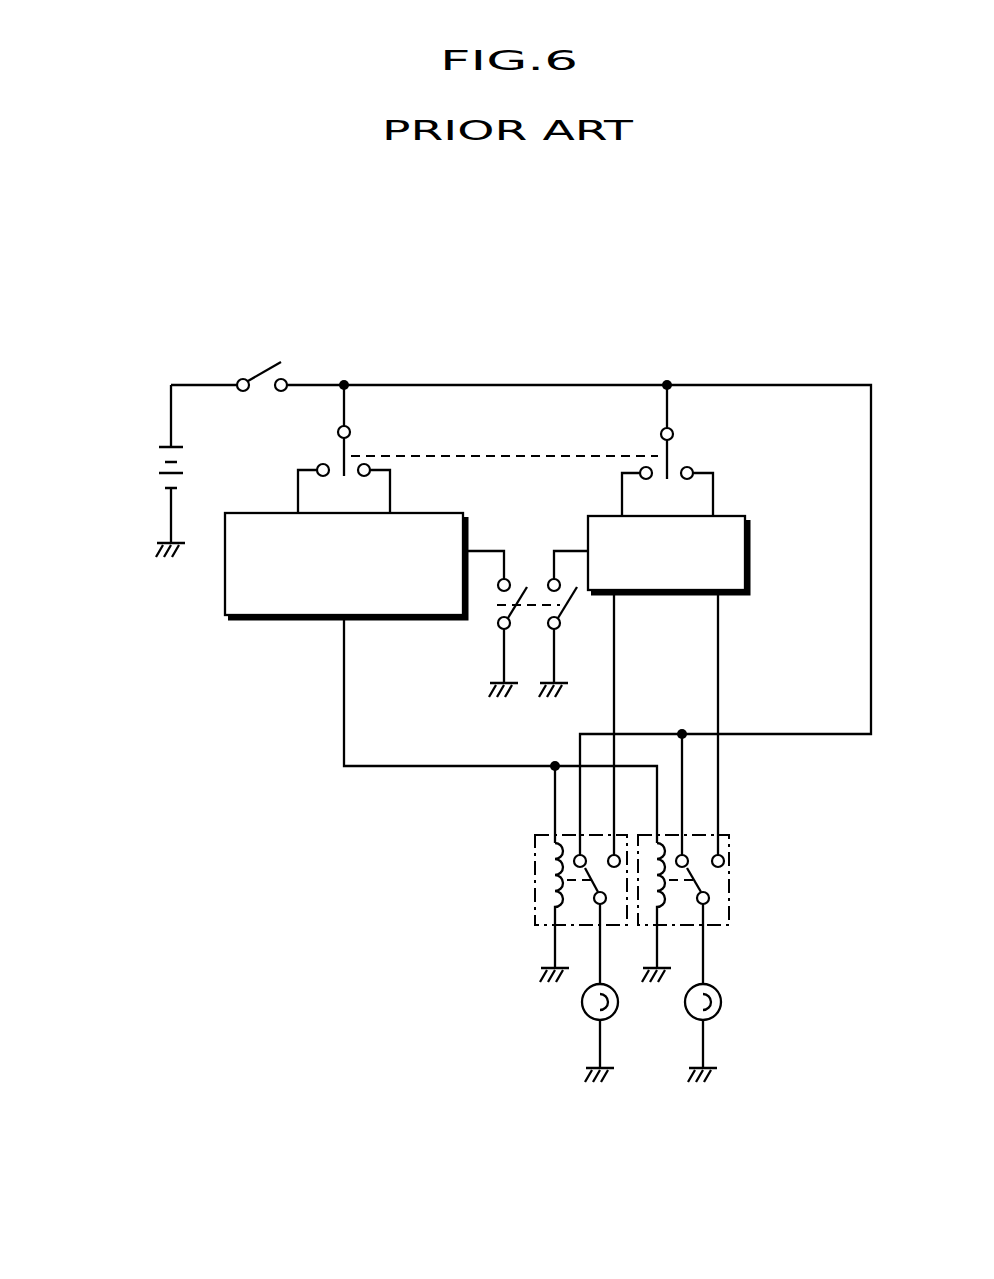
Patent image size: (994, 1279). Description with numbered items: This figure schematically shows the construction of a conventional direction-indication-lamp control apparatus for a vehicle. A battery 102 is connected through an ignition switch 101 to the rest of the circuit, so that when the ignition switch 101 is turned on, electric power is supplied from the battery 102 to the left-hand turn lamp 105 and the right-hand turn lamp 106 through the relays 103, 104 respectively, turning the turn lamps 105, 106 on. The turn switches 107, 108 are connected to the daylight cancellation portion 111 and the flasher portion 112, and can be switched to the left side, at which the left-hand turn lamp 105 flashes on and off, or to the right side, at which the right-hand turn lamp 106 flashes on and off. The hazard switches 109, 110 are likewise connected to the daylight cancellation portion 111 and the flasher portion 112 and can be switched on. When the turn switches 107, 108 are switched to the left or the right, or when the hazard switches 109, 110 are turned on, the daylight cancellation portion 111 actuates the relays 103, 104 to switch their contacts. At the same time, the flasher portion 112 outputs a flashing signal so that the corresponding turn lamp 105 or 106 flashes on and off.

The ignition switch 101 is at (262, 362).
The battery 102 is at (157, 473).
The relay 103 is at (535, 898).
The relay 104 is at (733, 895).
The left-hand turn lamp 105 is at (618, 1005).
The right-hand turn lamp 106 is at (721, 1005).
The turn switch 107 is at (353, 450).
The turn switch 108 is at (672, 452).
The hazard switch 109 is at (497, 603).
The hazard switch 110 is at (568, 608).
The daylight cancellation portion 111 is at (457, 512).
The flasher portion 112 is at (739, 515).